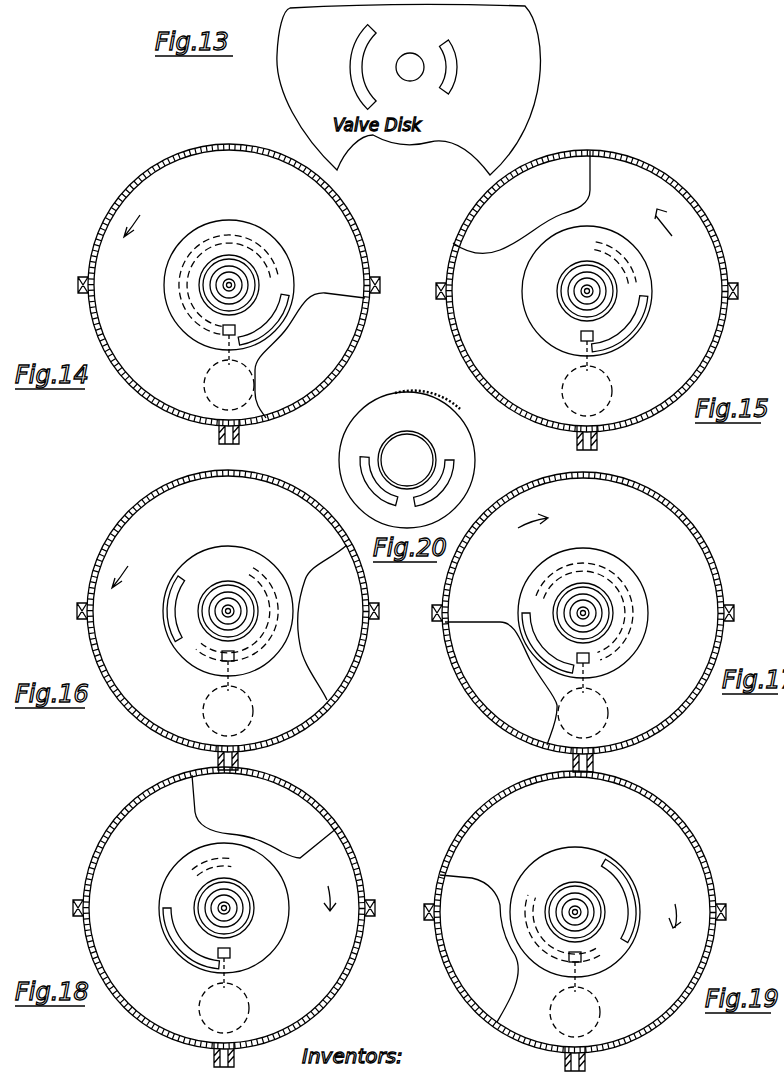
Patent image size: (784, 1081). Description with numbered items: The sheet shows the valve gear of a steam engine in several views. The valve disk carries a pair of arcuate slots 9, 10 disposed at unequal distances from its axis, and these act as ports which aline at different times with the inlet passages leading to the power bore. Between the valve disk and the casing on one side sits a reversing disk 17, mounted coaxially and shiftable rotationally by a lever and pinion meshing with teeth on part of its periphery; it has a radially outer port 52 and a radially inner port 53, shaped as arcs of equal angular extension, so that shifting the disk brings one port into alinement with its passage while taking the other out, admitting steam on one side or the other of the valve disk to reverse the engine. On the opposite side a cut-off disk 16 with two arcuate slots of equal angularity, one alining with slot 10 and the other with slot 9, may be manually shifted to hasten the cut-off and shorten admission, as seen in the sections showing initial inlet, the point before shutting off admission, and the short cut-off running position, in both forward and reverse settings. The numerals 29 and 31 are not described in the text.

In FIG. 13, the arcuate slot 9 is at (450, 50).
In FIG. 13, the arcuate slot 10 is at (360, 67).
In FIG. 15, the arcuate slot 10 is at (567, 291).
In FIG. 14, the cut-off disk 16 is at (229, 269).
In FIG. 20, the reversing disk 17 is at (462, 442).
In FIG. 15, the casing 29 is at (592, 300).
In FIG. 17, the casing 29 is at (590, 622).
In FIG. 16, the vane slots 31 is at (222, 583).
In FIG. 20, the radially outer port 52 is at (462, 478).
In FIG. 20, the radially inner port 53 is at (365, 463).